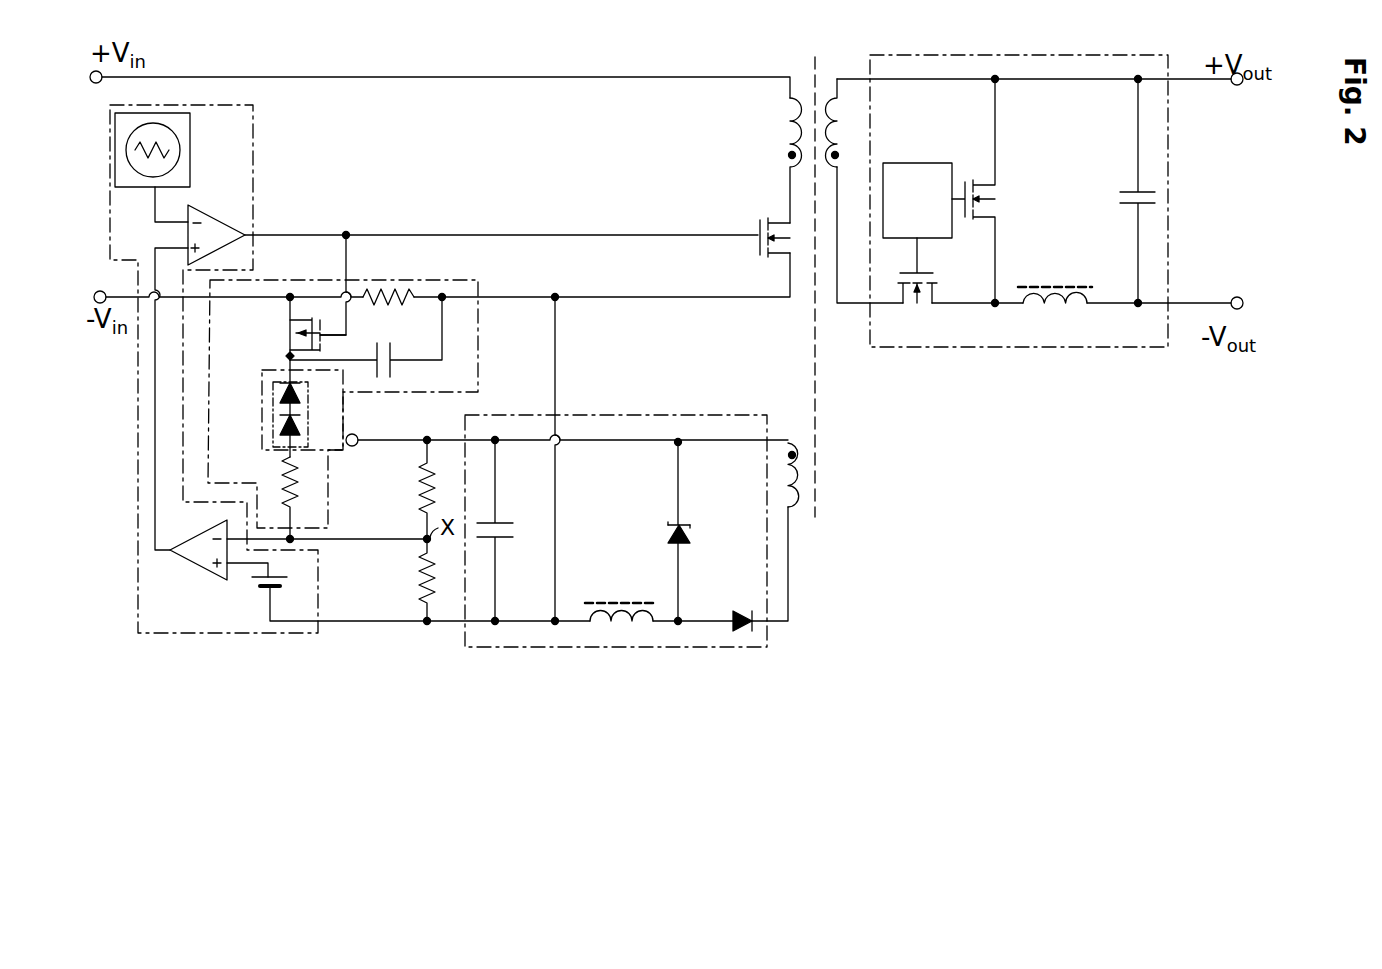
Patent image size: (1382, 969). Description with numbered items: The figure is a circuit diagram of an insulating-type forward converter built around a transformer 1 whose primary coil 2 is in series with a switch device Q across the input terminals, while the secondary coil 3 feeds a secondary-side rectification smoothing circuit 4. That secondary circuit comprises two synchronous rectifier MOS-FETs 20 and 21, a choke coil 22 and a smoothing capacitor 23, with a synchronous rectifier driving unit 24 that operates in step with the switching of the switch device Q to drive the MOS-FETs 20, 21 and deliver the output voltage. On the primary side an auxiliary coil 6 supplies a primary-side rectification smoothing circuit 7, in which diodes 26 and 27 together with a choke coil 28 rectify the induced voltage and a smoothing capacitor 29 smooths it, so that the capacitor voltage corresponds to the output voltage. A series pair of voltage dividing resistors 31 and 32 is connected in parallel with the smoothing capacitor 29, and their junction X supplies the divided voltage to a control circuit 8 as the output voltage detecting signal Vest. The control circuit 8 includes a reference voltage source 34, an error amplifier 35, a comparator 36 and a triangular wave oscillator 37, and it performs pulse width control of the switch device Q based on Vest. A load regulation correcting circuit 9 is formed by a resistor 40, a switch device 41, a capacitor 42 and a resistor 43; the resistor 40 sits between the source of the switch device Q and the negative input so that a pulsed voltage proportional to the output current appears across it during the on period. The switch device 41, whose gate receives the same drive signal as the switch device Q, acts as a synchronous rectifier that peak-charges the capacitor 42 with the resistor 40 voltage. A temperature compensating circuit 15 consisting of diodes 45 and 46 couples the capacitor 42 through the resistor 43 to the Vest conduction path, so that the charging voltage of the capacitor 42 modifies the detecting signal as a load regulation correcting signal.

The transformer 1 is at (815, 60).
The primary coil 2 is at (788, 125).
The secondary coil 3 is at (825, 133).
The secondary-side rectification smoothing circuit 4 is at (1016, 54).
The auxiliary coil 6 is at (802, 473).
The primary-side rectification smoothing circuit 7 is at (615, 648).
The control circuit 8 is at (136, 420).
The load regulation correcting circuit 9 is at (357, 275).
The temperature compensating circuit 15 is at (314, 402).
The MOS-FET 20 is at (934, 295).
The MOS-FET 21 is at (976, 183).
The choke coil 22 is at (1055, 296).
The smoothing capacitor 23 is at (1132, 192).
The synchronous rectifier driving unit 24 is at (917, 163).
The diode 26 is at (682, 536).
The diode 27 is at (736, 621).
The choke coil 28 is at (616, 602).
The smoothing capacitor 29 is at (500, 540).
The voltage dividing resistor 31 is at (420, 490).
The voltage dividing resistor 32 is at (418, 578).
The reference voltage source 34 is at (264, 592).
The error amplifier 35 is at (206, 572).
The comparator 36 is at (216, 213).
The triangular wave oscillator 37 is at (190, 135).
The resistor 40 is at (387, 294).
The switch device 41 is at (290, 335).
The capacitor 42 is at (397, 344).
The resistor 43 is at (290, 483).
The diode 45 is at (302, 392).
The diode 46 is at (322, 419).
The switch device Q is at (758, 230).